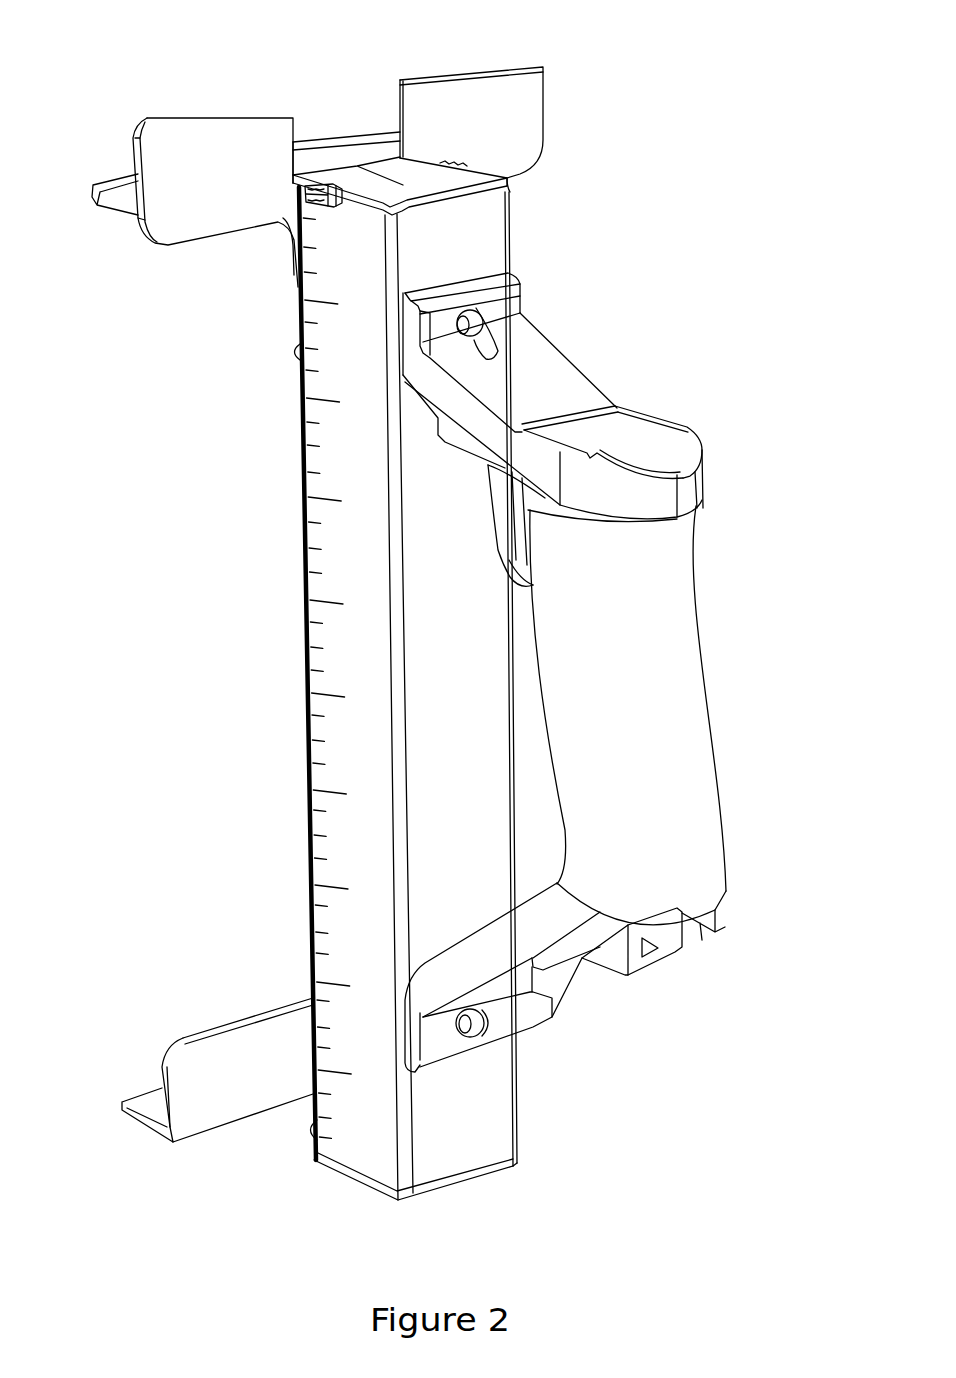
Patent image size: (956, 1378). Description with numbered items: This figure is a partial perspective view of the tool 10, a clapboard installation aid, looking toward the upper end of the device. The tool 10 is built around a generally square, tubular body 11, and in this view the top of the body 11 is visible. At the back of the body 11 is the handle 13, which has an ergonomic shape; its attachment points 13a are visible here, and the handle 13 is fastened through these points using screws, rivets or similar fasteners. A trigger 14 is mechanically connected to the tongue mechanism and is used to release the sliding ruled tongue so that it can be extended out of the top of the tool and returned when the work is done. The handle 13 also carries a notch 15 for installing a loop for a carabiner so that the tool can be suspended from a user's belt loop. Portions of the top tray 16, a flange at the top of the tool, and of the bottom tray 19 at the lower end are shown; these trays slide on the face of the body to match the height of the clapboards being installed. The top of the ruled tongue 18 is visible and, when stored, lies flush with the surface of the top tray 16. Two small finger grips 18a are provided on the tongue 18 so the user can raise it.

The tool 10 is at (201, 628).
The tubular body 11 is at (308, 845).
The handle 13 is at (692, 711).
The attachment points 13a is at (463, 325).
The trigger 14 is at (492, 556).
The notch 15 is at (643, 950).
The top tray 16 is at (135, 172).
The ruled tongue 18 is at (350, 173).
The finger grips 18a is at (313, 197).
The bottom tray 19 is at (157, 1054).